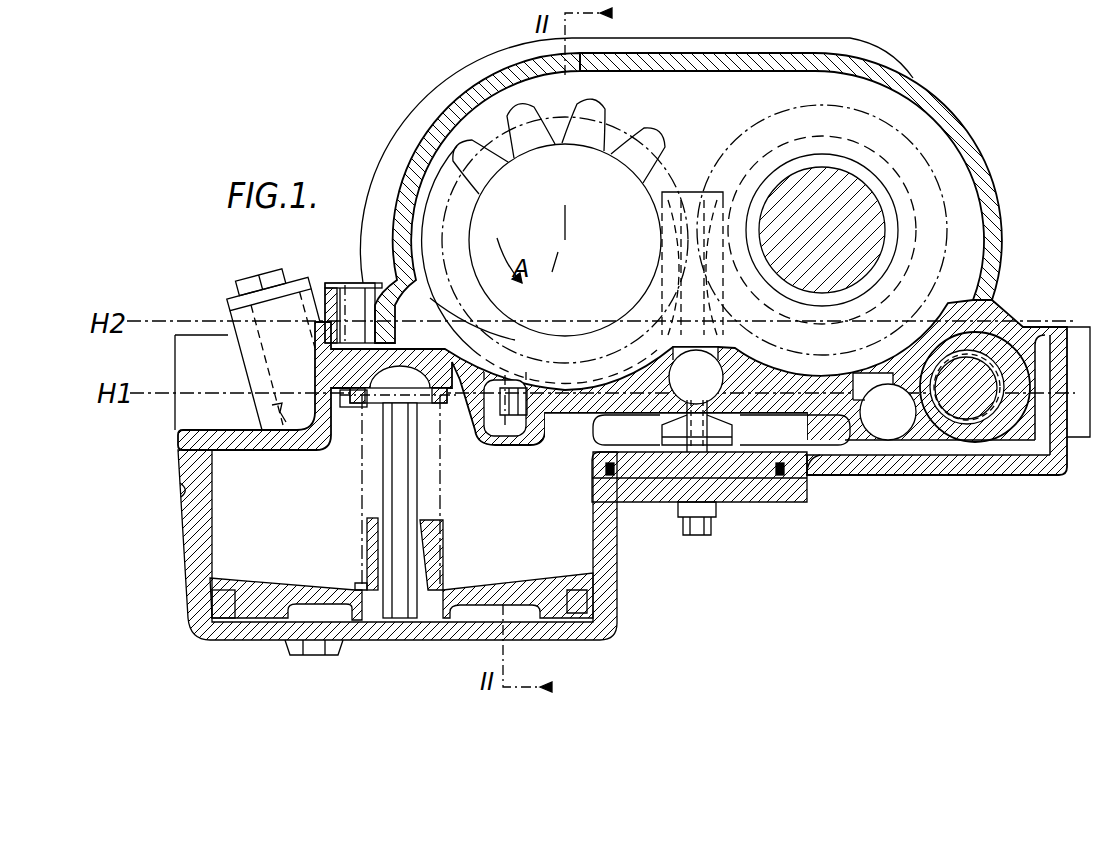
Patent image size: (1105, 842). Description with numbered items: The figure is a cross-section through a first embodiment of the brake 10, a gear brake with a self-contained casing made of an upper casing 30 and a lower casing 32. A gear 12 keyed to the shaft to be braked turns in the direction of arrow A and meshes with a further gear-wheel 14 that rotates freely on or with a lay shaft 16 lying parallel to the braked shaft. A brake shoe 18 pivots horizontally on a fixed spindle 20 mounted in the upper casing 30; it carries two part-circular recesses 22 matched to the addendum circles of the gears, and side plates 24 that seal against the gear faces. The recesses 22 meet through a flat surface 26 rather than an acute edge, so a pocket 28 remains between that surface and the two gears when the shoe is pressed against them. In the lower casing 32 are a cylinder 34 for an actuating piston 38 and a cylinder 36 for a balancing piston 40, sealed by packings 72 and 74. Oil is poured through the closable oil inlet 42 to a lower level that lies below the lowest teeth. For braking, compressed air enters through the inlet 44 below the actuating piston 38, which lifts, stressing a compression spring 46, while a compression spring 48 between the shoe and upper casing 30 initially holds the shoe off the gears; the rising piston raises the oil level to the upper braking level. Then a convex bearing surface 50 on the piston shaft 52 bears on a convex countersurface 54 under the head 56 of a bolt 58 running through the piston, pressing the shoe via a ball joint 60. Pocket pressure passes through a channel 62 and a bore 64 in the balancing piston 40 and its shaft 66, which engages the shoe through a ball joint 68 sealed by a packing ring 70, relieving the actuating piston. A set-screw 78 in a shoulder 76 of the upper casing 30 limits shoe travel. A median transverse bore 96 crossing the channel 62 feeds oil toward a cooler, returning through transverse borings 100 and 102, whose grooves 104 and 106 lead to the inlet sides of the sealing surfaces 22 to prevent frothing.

The brake 10 is at (977, 113).
The gear 12 is at (607, 170).
The gear-wheel 14 is at (790, 125).
The lay shaft 16 is at (842, 200).
The brake shoe 18 is at (838, 410).
The fixed spindle 20 is at (977, 442).
The part-circular sectioned recesses 22 is at (610, 345).
The side plates 24 is at (645, 268).
The flat surface 26 is at (672, 256).
The pocket 28 is at (696, 318).
The upper casing 30 is at (1000, 252).
The lower casing 32 is at (1040, 460).
The cylinder 34 is at (205, 535).
The cylinder 36 is at (750, 480).
The actuating piston 38 is at (263, 607).
The balancing piston 40 is at (595, 500).
The closable oil inlet 42 is at (273, 362).
The inlet 44 is at (320, 652).
The compression spring 46 is at (445, 583).
The compression spring 48 is at (365, 288).
The convex bearing surface 50 is at (427, 517).
The piston shaft 52 is at (377, 568).
The convex countersurface 54 is at (367, 405).
The head 56 is at (443, 413).
The bolt 58 is at (397, 483).
The ball joint 60 is at (440, 312).
The channel 62 is at (722, 348).
The bore 64 is at (697, 457).
The shaft 66 is at (712, 455).
The ball joint 68 is at (660, 417).
The packing ring 70 is at (737, 438).
The packing 72 is at (220, 593).
The packing 74 is at (810, 490).
The shoulder 76 is at (468, 270).
The set-screw 78 is at (337, 282).
The median transverse bore 96 is at (712, 388).
The transverse boring 100 is at (514, 425).
The transverse boring 102 is at (893, 427).
The groove 104 is at (518, 388).
The groove 106 is at (963, 407).